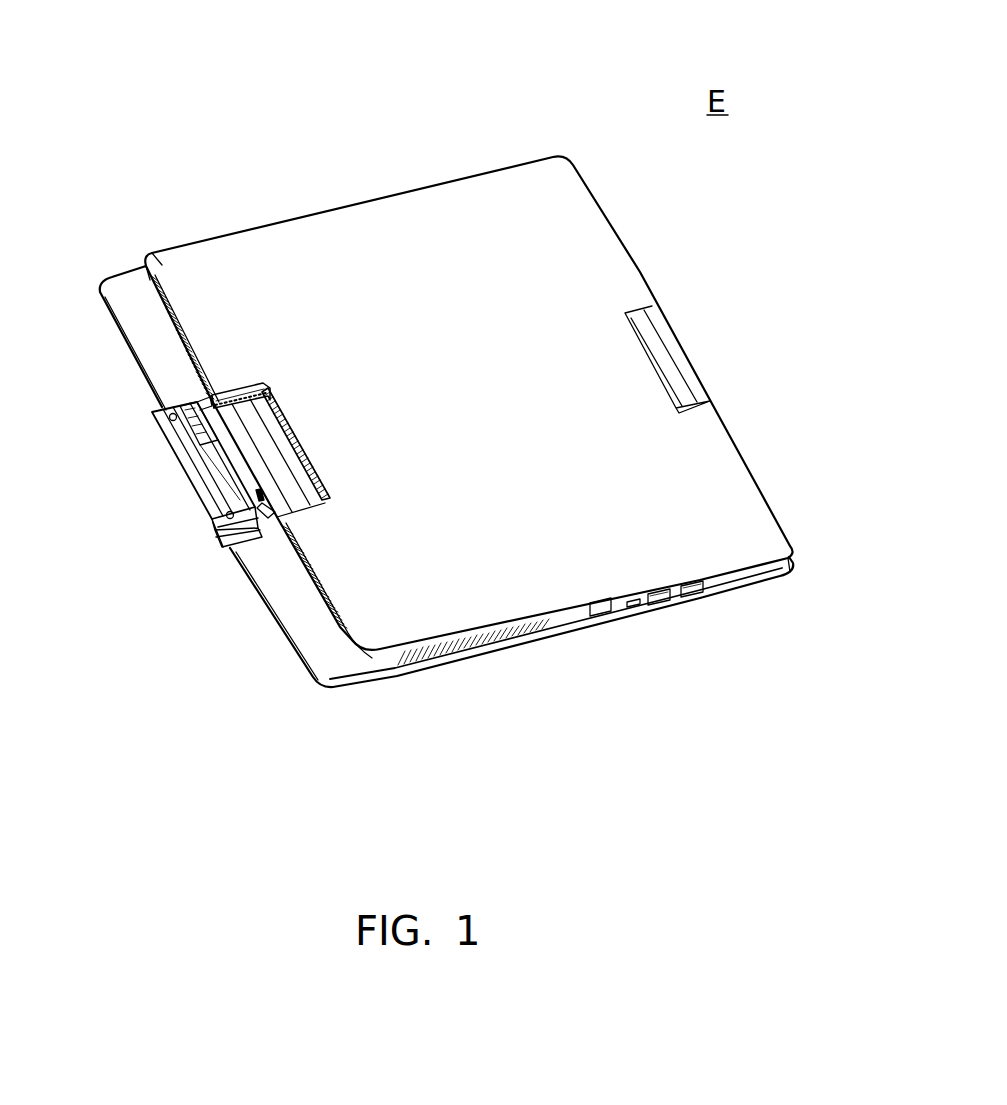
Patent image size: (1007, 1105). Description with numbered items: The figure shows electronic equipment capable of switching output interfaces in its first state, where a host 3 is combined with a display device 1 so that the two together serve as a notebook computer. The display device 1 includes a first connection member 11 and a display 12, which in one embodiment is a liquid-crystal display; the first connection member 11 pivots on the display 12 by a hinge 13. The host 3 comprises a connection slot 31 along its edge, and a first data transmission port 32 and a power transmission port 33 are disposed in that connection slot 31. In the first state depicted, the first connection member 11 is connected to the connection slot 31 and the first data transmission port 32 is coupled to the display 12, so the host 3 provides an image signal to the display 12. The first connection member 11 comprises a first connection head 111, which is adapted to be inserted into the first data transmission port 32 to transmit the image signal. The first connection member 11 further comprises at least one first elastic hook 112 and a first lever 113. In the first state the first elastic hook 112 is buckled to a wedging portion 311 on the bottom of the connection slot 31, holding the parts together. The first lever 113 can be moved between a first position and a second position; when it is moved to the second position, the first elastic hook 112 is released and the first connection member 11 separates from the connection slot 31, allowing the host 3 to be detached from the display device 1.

The display device 1 is at (52, 10).
The first connection member 11 is at (153, 422).
The display 12 is at (303, 622).
The hinge 13 is at (233, 548).
The first connection head 111 is at (243, 488).
The first elastic hook 112 is at (205, 400).
The first lever 113 is at (170, 418).
The host 3 is at (355, 240).
The connection slot 31 is at (243, 386).
The wedging portion 311 is at (276, 388).
The first data transmission port 32 is at (311, 478).
The power transmission port 33 is at (292, 432).